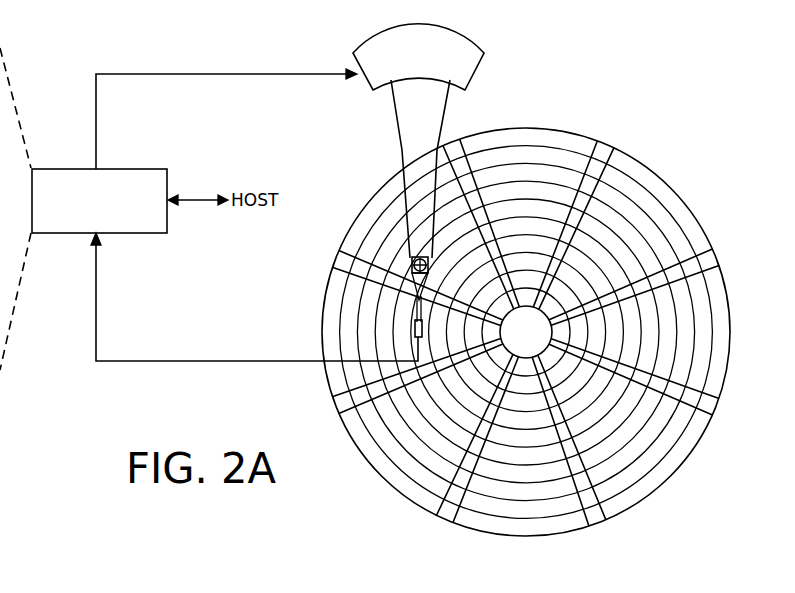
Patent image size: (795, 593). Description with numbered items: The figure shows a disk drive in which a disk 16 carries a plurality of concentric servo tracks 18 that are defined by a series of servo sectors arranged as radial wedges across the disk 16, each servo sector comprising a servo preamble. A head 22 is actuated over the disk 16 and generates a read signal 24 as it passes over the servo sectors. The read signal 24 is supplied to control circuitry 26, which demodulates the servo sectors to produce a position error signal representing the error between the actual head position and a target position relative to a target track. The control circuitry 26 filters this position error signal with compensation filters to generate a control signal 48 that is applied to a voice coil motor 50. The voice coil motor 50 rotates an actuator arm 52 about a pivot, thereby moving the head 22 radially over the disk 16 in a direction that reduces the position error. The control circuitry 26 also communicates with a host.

The disk 16 is at (674, 170).
The servo tracks 18 is at (525, 154).
The head 22 is at (405, 325).
The read signal 24 is at (193, 361).
The control circuitry 26 is at (134, 169).
The control signal 48 is at (95, 126).
The voice coil motor 50 is at (373, 90).
The actuator arm 52 is at (402, 152).